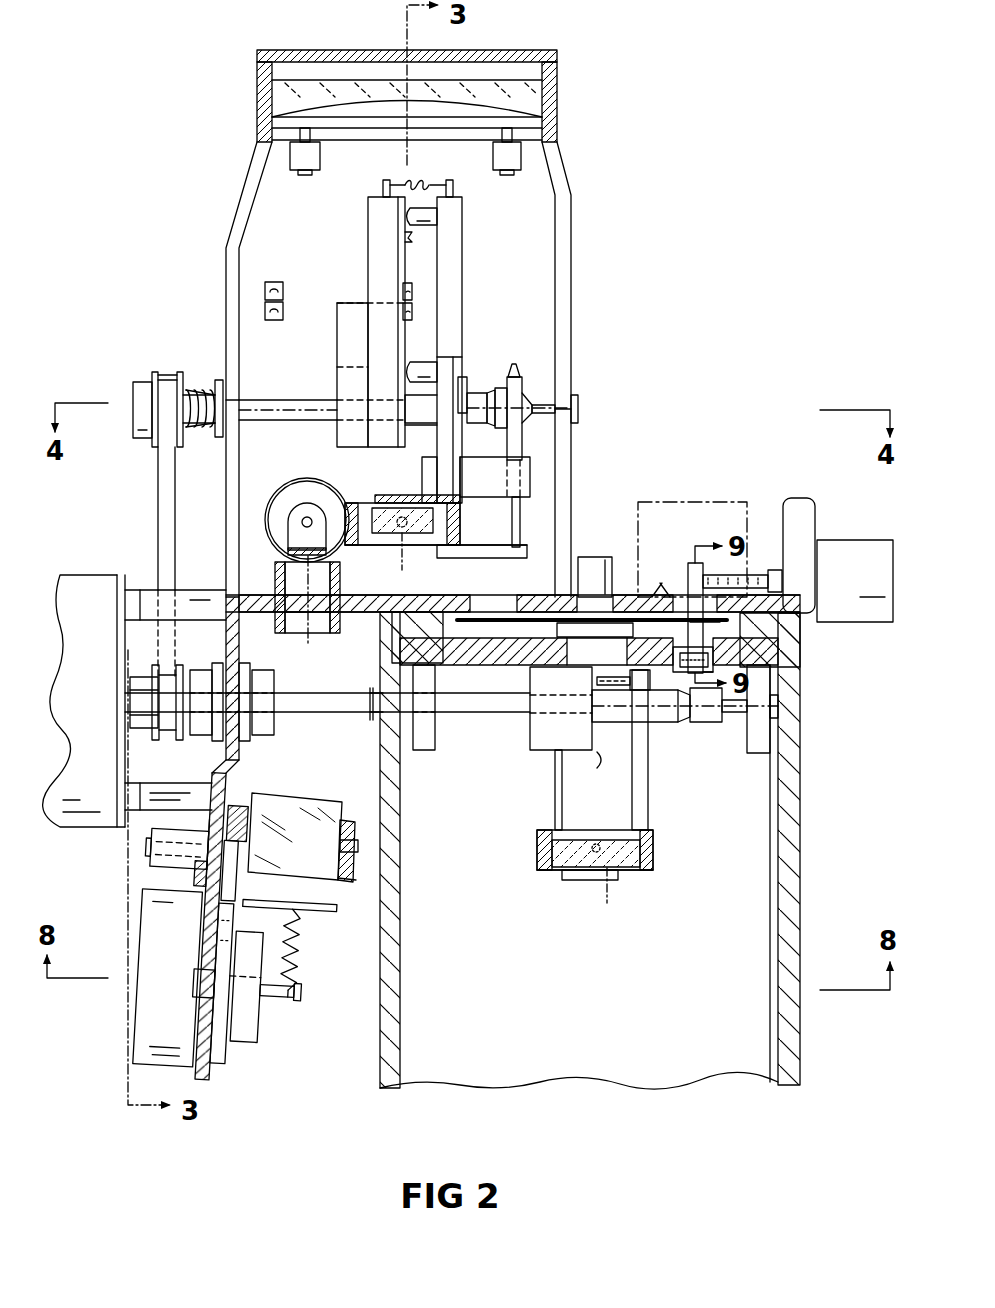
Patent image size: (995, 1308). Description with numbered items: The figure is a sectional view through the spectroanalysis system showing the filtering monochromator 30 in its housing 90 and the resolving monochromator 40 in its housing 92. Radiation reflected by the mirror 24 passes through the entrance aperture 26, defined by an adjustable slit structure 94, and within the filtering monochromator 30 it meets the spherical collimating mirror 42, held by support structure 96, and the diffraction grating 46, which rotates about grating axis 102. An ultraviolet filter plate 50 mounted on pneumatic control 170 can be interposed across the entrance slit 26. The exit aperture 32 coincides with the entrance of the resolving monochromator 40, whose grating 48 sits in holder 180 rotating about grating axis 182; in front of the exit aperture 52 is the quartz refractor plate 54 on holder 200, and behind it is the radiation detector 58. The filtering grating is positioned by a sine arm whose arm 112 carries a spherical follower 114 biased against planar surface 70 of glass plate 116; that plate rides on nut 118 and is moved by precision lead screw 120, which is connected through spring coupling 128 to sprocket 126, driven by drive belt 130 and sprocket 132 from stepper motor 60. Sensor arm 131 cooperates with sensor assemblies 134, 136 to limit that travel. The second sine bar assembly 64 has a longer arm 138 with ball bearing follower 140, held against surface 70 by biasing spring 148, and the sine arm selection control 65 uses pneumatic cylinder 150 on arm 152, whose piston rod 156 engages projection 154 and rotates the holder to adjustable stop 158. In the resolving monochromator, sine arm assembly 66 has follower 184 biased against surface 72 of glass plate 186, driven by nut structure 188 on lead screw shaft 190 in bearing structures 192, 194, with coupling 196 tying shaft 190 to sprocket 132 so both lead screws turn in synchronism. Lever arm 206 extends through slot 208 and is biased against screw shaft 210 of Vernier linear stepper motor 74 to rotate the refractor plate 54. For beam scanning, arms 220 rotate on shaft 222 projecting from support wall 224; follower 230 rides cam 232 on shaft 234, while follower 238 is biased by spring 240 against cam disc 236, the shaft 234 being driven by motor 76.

The mirror 24 is at (306, 801).
The entrance aperture 26 is at (313, 636).
The filtering monochromator 30 is at (577, 231).
The exit aperture 32 is at (492, 621).
The resolving monochromator 40 is at (375, 1066).
The spherical collimating mirror 42 is at (348, 95).
The diffraction grating 46 is at (421, 534).
The grating 48 is at (553, 871).
The ultraviolet filter plate 50 is at (300, 546).
The exit aperture 52 is at (700, 623).
The refractor plate 54 is at (690, 650).
The radiation detector 58 is at (716, 502).
The stepper motor 60 is at (99, 590).
The second sine bar assembly 64 is at (464, 222).
The sine arm selection control 65 is at (538, 447).
The sine arm assembly 66 is at (652, 800).
The planar surface 70 is at (405, 238).
The surface 72 is at (593, 767).
The Vernier linear stepper motor 74 is at (880, 624).
The motor 76 is at (154, 1052).
The housing 90 is at (238, 276).
The housing 92 is at (796, 1044).
The adjustable slit structure 94 is at (340, 622).
The support structure 96 is at (550, 100).
The grating axis 102 is at (407, 555).
The arm 112 is at (447, 373).
The spherical follower 114 is at (406, 370).
The glass plate 116 is at (398, 254).
The nut 118 is at (415, 440).
The precision lead screw 120 is at (292, 404).
The sprocket 126 is at (141, 388).
The spring coupling 128 is at (201, 388).
The drive belt 130 is at (166, 521).
The sensor arm 131 is at (350, 303).
The sprocket 132 is at (153, 731).
The sensor assembly 134 is at (410, 283).
The sensor assembly 136 is at (273, 282).
The arm 138 is at (462, 282).
The ball bearing 140 is at (406, 214).
The biasing spring 148 is at (430, 186).
The pneumatic cylinder 150 is at (519, 505).
The arm 152 is at (479, 497).
The projection 154 is at (495, 559).
The piston rod 156 is at (522, 547).
The adjustable stop 158 is at (470, 388).
The pneumatic control 170 is at (306, 490).
The holder 180 is at (652, 862).
The grating axis 182 is at (596, 878).
The follower 184 is at (597, 681).
The glass plate 186 is at (530, 731).
The nut structure 188 is at (660, 716).
The lead screw shaft 190 is at (466, 706).
The bearing structure 192 is at (758, 753).
The bearing structure 194 is at (422, 752).
The coupling 196 is at (268, 723).
The holder 200 is at (690, 668).
The lever arm 206 is at (694, 563).
The slot 208 is at (660, 595).
The screw shaft 210 is at (751, 574).
The arms 220 is at (355, 878).
The shaft 222 is at (360, 853).
The support wall 224 is at (213, 821).
The follower 230 is at (212, 880).
The cam 232 is at (226, 925).
The shaft 234 is at (272, 992).
The cam disc 236 is at (257, 1025).
The follower 238 is at (292, 926).
The spring 240 is at (298, 964).